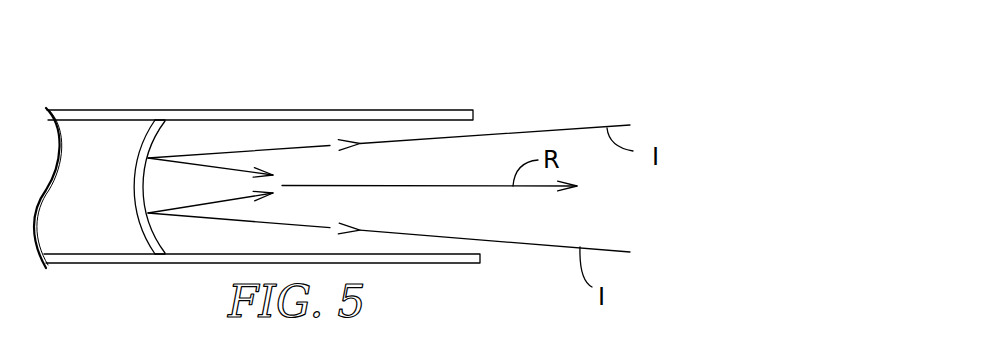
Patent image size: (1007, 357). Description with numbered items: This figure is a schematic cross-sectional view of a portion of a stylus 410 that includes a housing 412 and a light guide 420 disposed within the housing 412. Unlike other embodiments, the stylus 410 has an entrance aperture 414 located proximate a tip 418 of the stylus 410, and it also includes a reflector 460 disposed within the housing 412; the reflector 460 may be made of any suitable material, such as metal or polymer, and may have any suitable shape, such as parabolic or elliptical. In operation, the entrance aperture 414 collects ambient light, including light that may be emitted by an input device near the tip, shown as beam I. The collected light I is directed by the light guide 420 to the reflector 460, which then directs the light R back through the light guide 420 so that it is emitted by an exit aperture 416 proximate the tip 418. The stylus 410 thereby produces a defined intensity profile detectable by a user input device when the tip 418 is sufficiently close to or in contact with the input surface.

The stylus 410 is at (329, 172).
The housing 412 is at (273, 110).
The entrance aperture 414 is at (488, 123).
The exit aperture 416 is at (608, 213).
The tip 418 is at (490, 265).
The light guide 420 is at (191, 234).
The reflector 460 is at (160, 128).